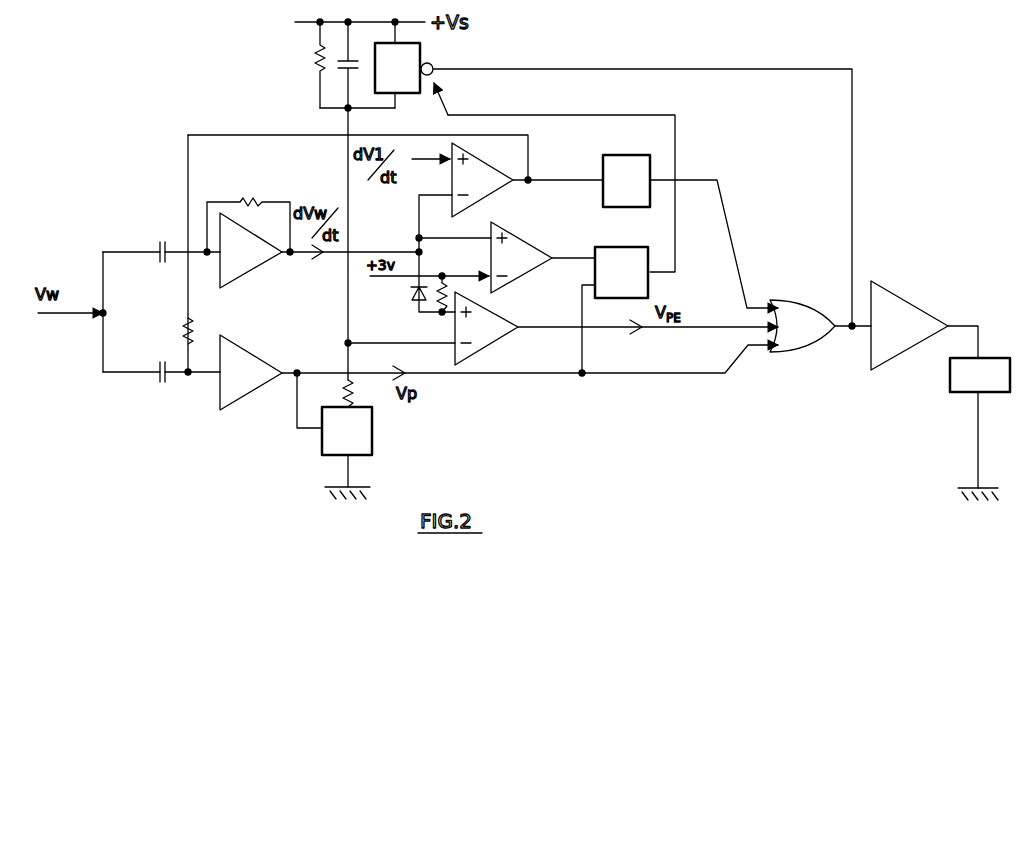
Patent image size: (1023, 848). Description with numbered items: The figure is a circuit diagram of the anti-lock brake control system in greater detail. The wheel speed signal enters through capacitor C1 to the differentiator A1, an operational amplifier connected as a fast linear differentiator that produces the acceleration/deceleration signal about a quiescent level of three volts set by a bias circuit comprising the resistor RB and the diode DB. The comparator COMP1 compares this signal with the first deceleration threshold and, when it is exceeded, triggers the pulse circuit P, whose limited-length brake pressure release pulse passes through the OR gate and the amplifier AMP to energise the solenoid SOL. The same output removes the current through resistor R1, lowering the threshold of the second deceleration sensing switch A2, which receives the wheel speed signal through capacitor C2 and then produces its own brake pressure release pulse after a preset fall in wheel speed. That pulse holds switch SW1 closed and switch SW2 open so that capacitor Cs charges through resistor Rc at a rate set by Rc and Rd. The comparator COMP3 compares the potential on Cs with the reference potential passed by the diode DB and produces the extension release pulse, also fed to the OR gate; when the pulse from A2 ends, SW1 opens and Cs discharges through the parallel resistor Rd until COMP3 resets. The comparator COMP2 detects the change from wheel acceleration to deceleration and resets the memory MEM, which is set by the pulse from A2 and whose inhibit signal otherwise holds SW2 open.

The resistor Rd is at (303, 63).
The capacitor Cs is at (350, 199).
The switch SW2 is at (407, 89).
The capacitor 1 C1 is at (155, 242).
The capacitor C2 is at (155, 383).
The resistor R1 is at (170, 331).
The differentiator A1 is at (256, 261).
The second deceleration sensing switch A2 is at (256, 382).
The comparator COMP1 is at (472, 182).
The comparator COMP2 is at (513, 263).
The comparator COMP3 is at (500, 333).
The diode DB is at (412, 283).
The resistor RB is at (452, 290).
The pulse circuit P is at (634, 191).
The memory unit MEM is at (645, 281).
The OR gate OR is at (816, 335).
The amplifier AMP is at (918, 335).
The solenoid SOL is at (997, 385).
The resistor Rc is at (333, 393).
The switch SW1 is at (358, 452).